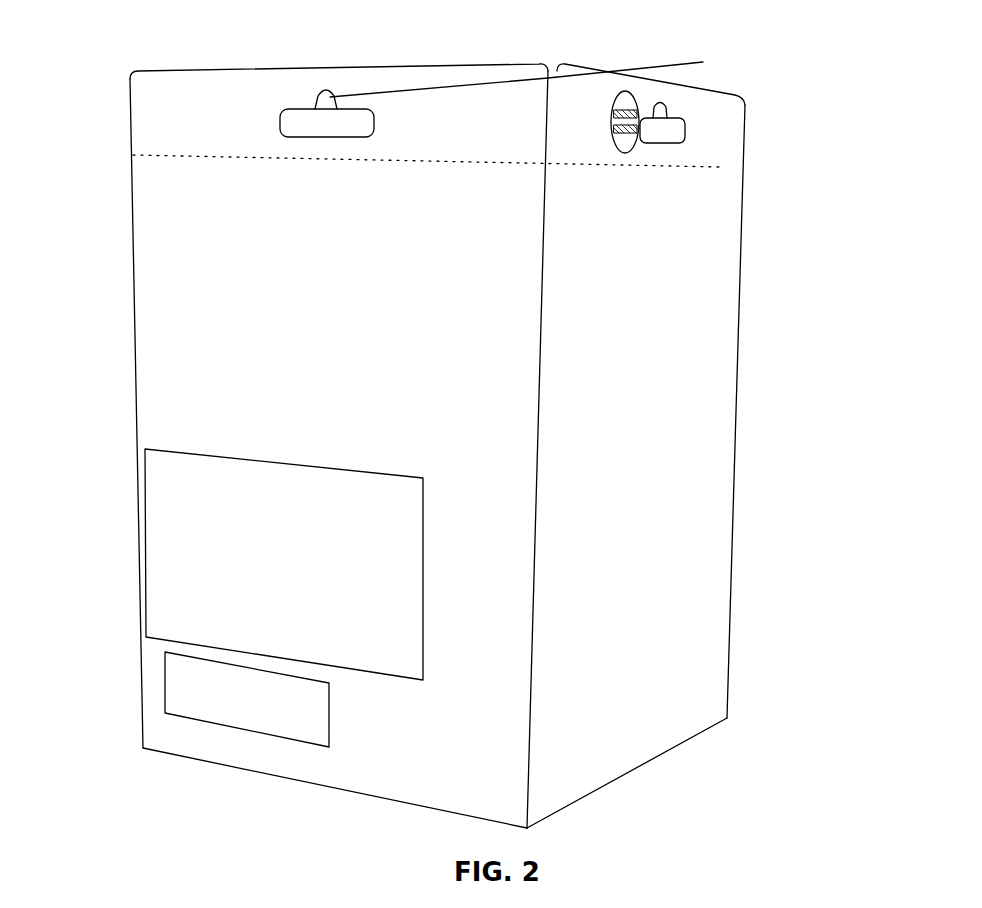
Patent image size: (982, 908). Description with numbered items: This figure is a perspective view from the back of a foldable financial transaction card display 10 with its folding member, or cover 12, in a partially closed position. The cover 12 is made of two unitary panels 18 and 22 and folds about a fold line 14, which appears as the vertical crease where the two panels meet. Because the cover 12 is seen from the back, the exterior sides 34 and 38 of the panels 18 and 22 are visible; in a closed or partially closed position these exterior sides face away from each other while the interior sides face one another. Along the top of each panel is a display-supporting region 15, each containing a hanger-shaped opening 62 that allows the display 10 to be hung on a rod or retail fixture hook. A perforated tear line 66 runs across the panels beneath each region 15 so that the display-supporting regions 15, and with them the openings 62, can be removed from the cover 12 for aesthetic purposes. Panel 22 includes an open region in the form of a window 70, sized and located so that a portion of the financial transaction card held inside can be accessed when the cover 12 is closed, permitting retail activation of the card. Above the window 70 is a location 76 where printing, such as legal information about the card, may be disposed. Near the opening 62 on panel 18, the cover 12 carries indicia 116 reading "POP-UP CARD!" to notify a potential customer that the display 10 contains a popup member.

The financial transaction card display 10 is at (268, 808).
The folding member 12 is at (761, 697).
The fold line 14 is at (538, 513).
The display-supporting region 15 is at (188, 116).
The panel 18 is at (738, 402).
The panel 22 is at (135, 297).
The side 34 is at (601, 280).
The side 38 is at (268, 280).
The opening 62 is at (667, 130).
The tear line 66 is at (130, 156).
The window 70 is at (215, 702).
The location 76 is at (163, 526).
The indicia 116 is at (625, 148).